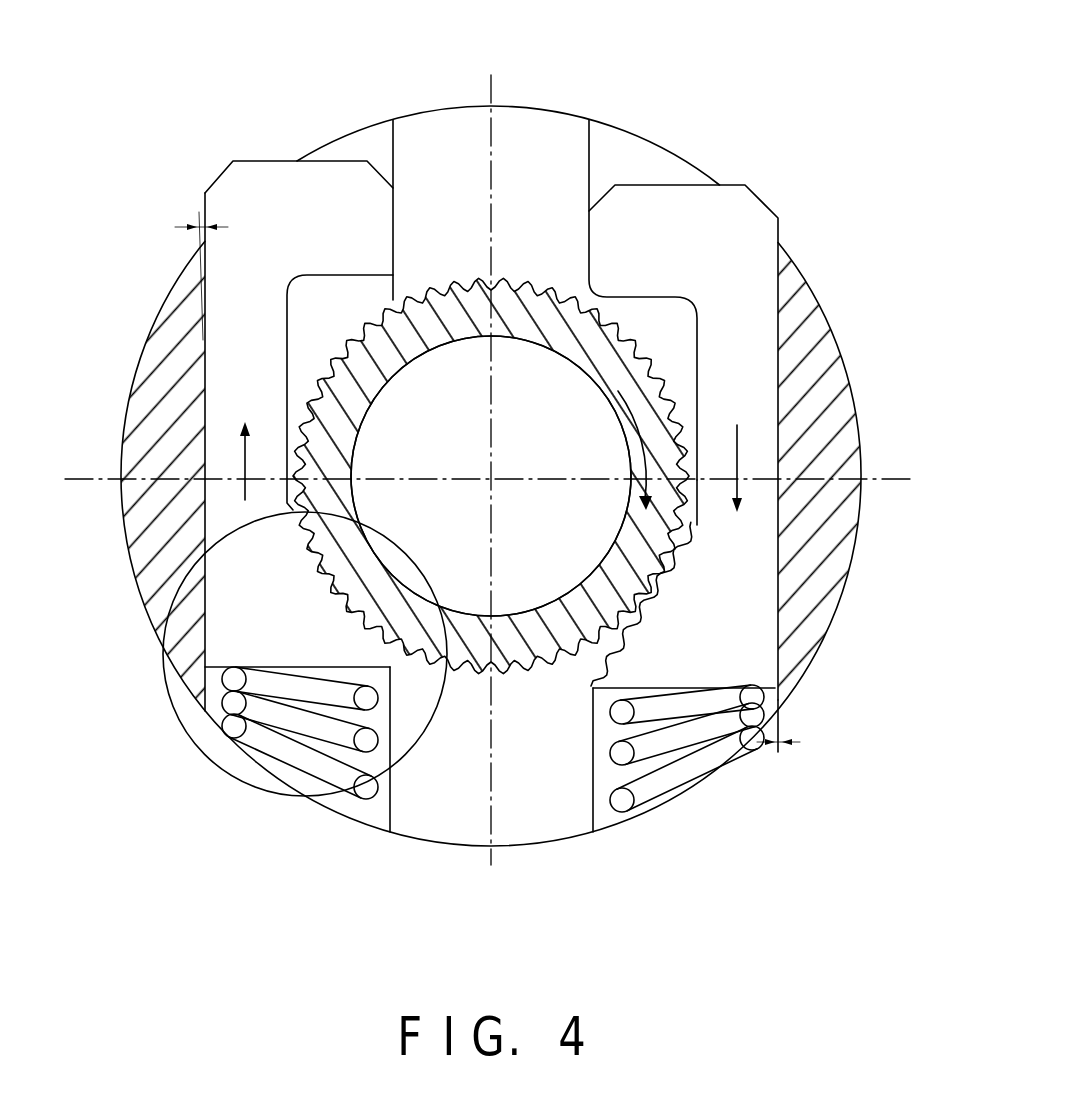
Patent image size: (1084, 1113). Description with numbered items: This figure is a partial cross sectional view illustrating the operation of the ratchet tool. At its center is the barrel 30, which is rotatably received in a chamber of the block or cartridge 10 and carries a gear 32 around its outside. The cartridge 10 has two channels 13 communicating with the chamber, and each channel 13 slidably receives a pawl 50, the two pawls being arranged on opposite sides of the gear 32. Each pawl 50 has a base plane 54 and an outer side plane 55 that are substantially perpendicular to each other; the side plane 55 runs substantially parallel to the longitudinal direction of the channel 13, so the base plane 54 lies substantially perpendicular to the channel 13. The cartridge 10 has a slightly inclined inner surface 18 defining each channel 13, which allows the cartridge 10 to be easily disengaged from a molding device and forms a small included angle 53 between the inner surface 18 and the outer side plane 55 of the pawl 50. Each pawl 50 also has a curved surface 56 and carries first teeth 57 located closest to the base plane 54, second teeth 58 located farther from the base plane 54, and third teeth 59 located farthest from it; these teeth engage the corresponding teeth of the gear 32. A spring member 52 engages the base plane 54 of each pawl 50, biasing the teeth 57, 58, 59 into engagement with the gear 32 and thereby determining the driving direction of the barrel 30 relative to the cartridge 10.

The cartridge 10 is at (846, 427).
The channel 13 is at (772, 338).
The inclined inner surface 18 is at (770, 637).
The barrel 30 is at (538, 333).
The gear 32 is at (437, 287).
The pawl 50 is at (217, 418).
The spring member 52 is at (283, 732).
The included angle 53 is at (198, 303).
The base plane 54 is at (593, 692).
The outer side plane 55 is at (695, 562).
The curved surface 56 is at (322, 557).
The first teeth 57 is at (652, 623).
The second teeth 58 is at (660, 645).
The third teeth 59 is at (663, 568).